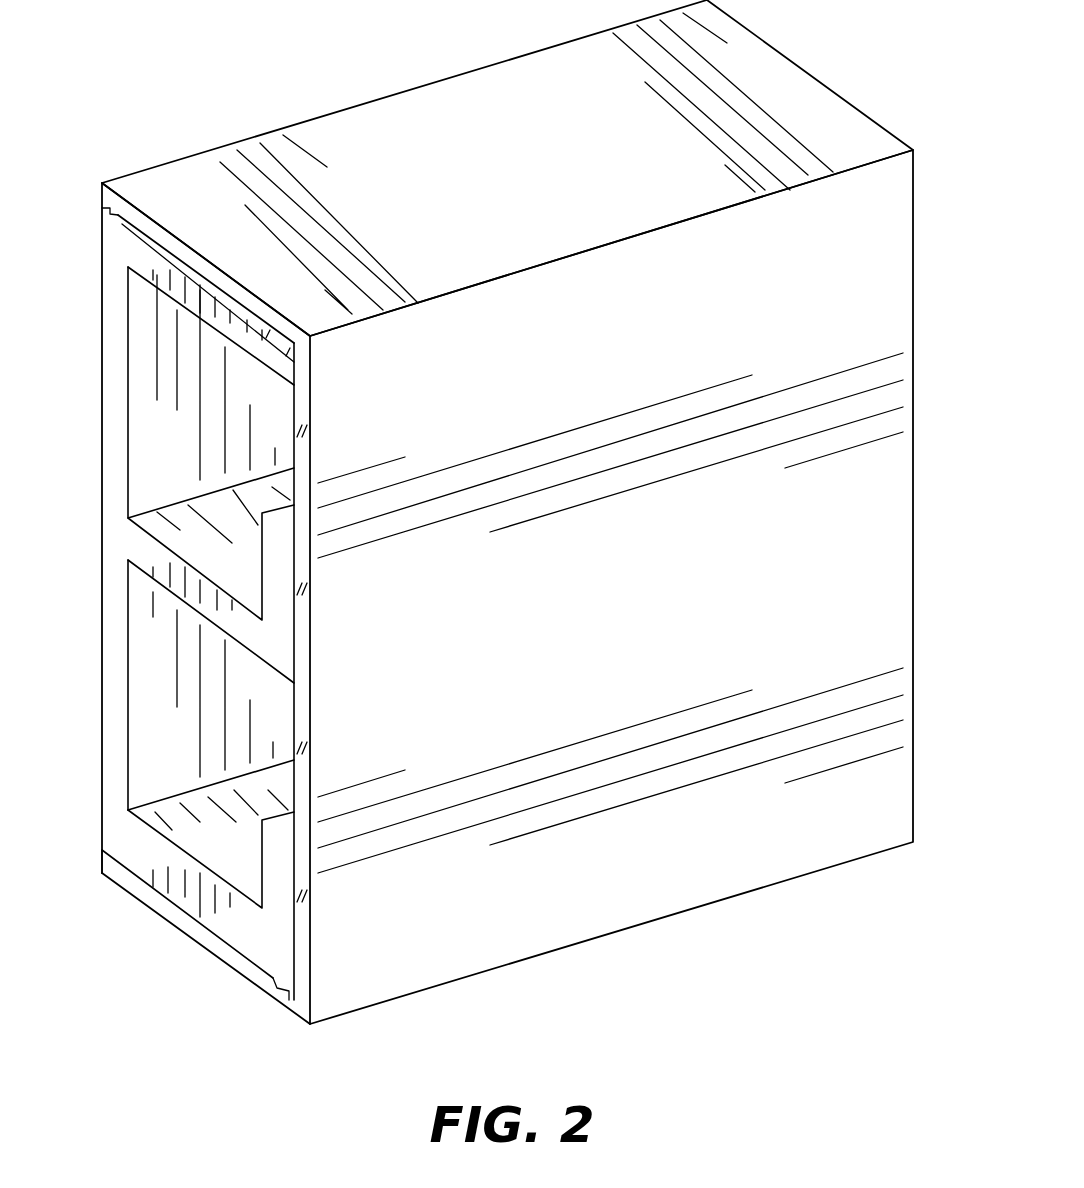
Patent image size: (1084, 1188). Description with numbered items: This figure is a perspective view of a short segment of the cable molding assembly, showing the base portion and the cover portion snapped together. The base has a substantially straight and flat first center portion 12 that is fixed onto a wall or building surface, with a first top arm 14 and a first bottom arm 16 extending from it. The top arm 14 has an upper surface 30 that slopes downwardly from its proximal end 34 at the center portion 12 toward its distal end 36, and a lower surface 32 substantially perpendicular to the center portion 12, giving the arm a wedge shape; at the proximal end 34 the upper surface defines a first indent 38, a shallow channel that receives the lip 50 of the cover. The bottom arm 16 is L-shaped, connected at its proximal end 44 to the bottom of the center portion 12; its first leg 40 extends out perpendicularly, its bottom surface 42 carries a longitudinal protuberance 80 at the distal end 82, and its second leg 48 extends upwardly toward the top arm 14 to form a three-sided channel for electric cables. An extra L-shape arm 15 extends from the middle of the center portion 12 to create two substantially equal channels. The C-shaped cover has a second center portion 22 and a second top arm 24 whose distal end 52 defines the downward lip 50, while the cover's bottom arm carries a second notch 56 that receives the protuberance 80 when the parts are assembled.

The first center portion 12 is at (145, 436).
The first top arm 14 is at (155, 261).
The extra L-shape arm 15 is at (180, 583).
The first bottom arm 16 is at (190, 900).
The second center portion 22 is at (903, 527).
The second top arm 24 is at (458, 136).
The upper surface 30 is at (182, 267).
The lower surface 32 is at (197, 318).
The proximal end 34 is at (118, 237).
The distal end 36 is at (274, 366).
The first indent 38 is at (111, 212).
The first leg 40 is at (178, 834).
The bottom surface 42 is at (205, 928).
The proximal end 44 is at (110, 835).
The second leg 48 is at (278, 901).
The lip 50 is at (111, 204).
The distal end 52 is at (148, 194).
The second notch 56 is at (273, 984).
The longitudinal protuberance 80 is at (283, 986).
The distal end 82 is at (240, 938).